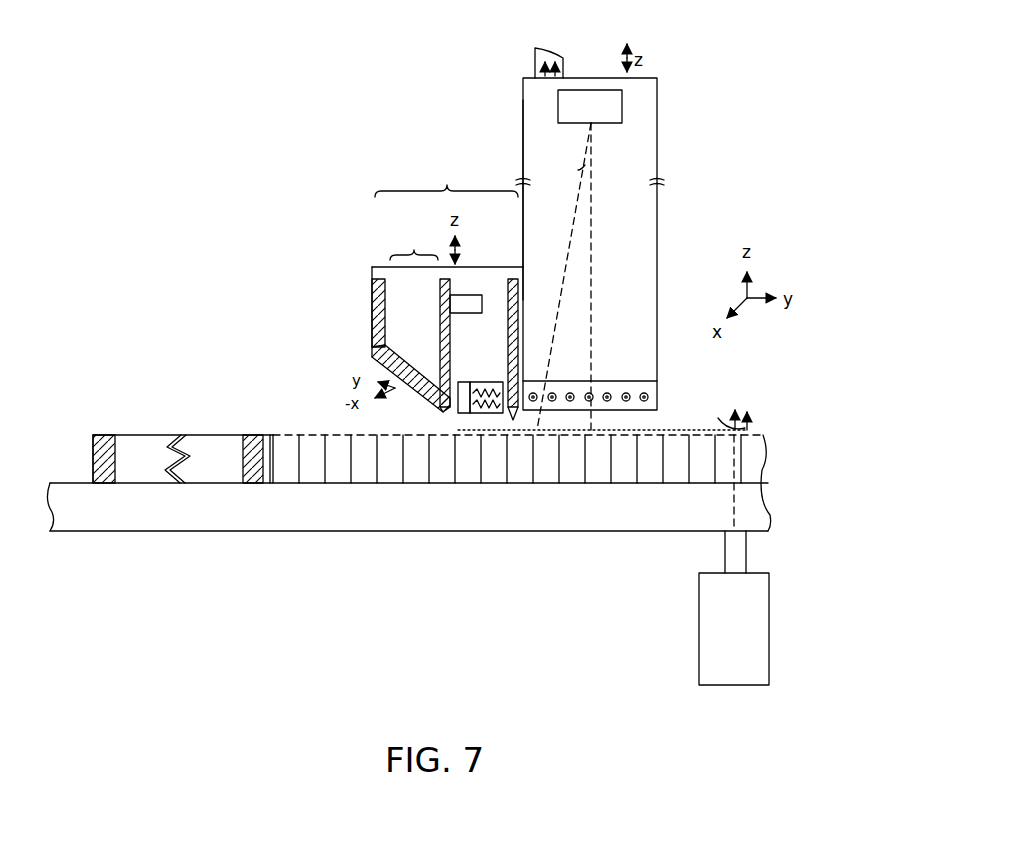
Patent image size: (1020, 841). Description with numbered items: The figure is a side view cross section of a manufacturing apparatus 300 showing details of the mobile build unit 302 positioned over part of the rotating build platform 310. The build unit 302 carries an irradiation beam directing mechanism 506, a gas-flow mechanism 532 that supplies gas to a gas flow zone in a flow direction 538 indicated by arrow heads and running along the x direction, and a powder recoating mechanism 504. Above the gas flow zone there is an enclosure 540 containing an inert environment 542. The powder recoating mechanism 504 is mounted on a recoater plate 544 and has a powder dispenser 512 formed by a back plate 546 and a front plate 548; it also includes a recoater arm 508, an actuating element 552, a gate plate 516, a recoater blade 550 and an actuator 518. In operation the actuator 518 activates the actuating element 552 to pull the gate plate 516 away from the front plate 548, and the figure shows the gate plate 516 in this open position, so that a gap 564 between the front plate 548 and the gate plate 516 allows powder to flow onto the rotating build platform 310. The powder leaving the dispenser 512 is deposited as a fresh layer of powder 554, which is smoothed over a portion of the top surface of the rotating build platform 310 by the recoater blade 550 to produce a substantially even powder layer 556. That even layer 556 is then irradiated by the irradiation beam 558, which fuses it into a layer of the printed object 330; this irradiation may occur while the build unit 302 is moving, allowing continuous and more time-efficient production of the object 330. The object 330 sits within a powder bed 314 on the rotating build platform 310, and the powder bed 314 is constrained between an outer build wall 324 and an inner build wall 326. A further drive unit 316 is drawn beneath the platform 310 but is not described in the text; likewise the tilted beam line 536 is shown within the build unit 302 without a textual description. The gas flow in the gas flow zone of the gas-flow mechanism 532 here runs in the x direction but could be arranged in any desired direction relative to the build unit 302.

The manufacturing apparatus 300 is at (296, 134).
The build unit 302 is at (490, 72).
The rotating build platform 310 is at (182, 517).
The powder bed 314 is at (218, 446).
The actuator 316 is at (757, 645).
The outer build wall 324 is at (100, 418).
The inner build wall 326 is at (252, 438).
The printed object 330 is at (183, 432).
The powder recoating mechanism 504 is at (447, 212).
The irradiation beam directing mechanism 506 is at (584, 92).
The recoater arm 508 is at (513, 272).
The powder dispenser 512 is at (414, 242).
The gate plate 516 is at (395, 385).
The actuator 518 is at (487, 413).
The gas-flow mechanism 532 is at (620, 383).
The tilted beam axis 536 is at (534, 382).
The gas flow direction 538 is at (610, 393).
The enclosure 540 is at (522, 125).
The inert environment 542 is at (535, 157).
The recoater plate 544 is at (372, 285).
The back plate 546 is at (400, 297).
The front plate 548 is at (455, 292).
The recoater blade 550 is at (517, 417).
The actuating element 552 is at (482, 297).
The fresh layer of powder 554 is at (440, 422).
The substantially even powder layer 556 is at (640, 430).
The irradiation beam 558 is at (596, 228).
The gap 564 is at (457, 413).